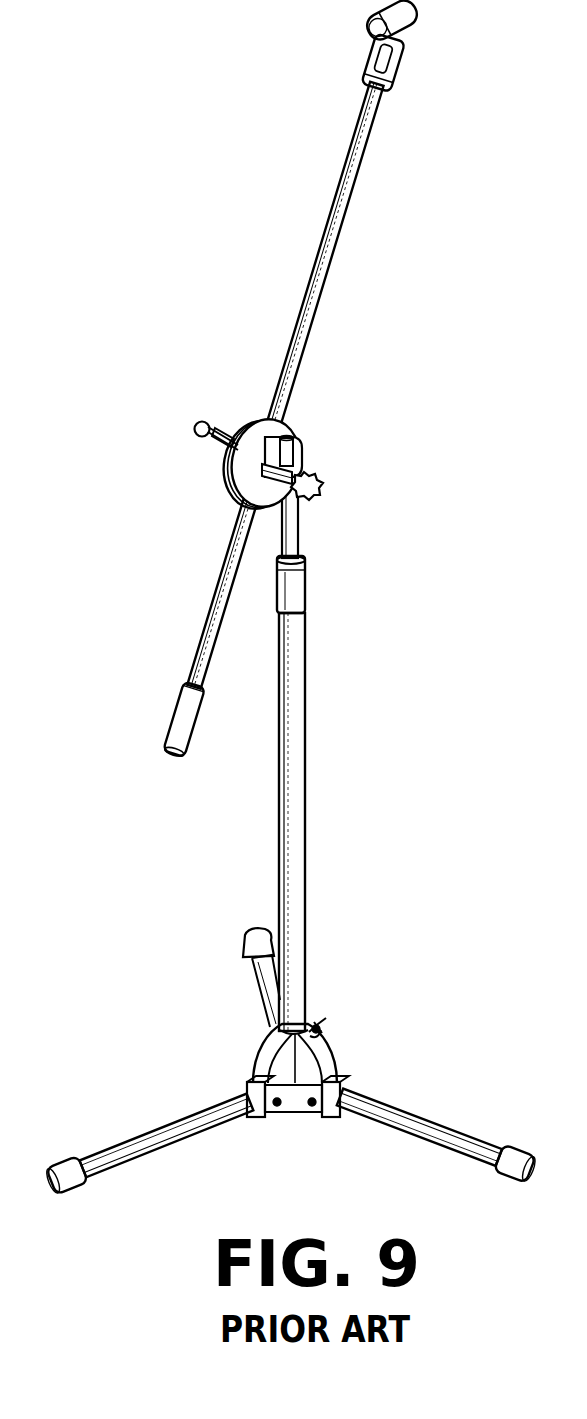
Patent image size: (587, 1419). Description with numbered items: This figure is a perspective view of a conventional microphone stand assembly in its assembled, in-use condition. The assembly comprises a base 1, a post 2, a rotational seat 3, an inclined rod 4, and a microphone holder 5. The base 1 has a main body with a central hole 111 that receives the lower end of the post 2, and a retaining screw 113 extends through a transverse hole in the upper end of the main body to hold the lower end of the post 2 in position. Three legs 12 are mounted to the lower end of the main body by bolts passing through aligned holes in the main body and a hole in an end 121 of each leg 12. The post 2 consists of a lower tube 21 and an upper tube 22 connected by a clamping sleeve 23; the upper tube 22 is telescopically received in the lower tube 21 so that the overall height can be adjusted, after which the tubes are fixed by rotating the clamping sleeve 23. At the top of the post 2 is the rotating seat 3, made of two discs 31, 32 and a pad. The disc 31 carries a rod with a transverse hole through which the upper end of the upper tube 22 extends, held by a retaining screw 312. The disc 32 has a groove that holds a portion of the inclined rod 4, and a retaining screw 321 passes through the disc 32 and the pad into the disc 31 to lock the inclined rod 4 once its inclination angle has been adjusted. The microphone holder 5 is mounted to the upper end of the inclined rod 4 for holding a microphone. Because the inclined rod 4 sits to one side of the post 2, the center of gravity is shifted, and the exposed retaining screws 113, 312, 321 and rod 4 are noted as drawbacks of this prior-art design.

The base 1 is at (291, 1055).
The central hole 111 is at (306, 1028).
The retaining screw 113 is at (411, 962).
The leg 12 is at (478, 1065).
The end of leg 121 is at (327, 1120).
The post 2 is at (338, 753).
The lower tube 21 is at (375, 732).
The upper tube 22 is at (292, 520).
The clamping sleeve 23 is at (296, 590).
The rotational seat 3 is at (317, 390).
The disc 31 is at (305, 439).
The retaining screw 312 is at (421, 422).
The disc 32 is at (270, 420).
The retaining screw 321 is at (226, 426).
The inclined rod 4 is at (383, 250).
The microphone holder 5 is at (398, 60).